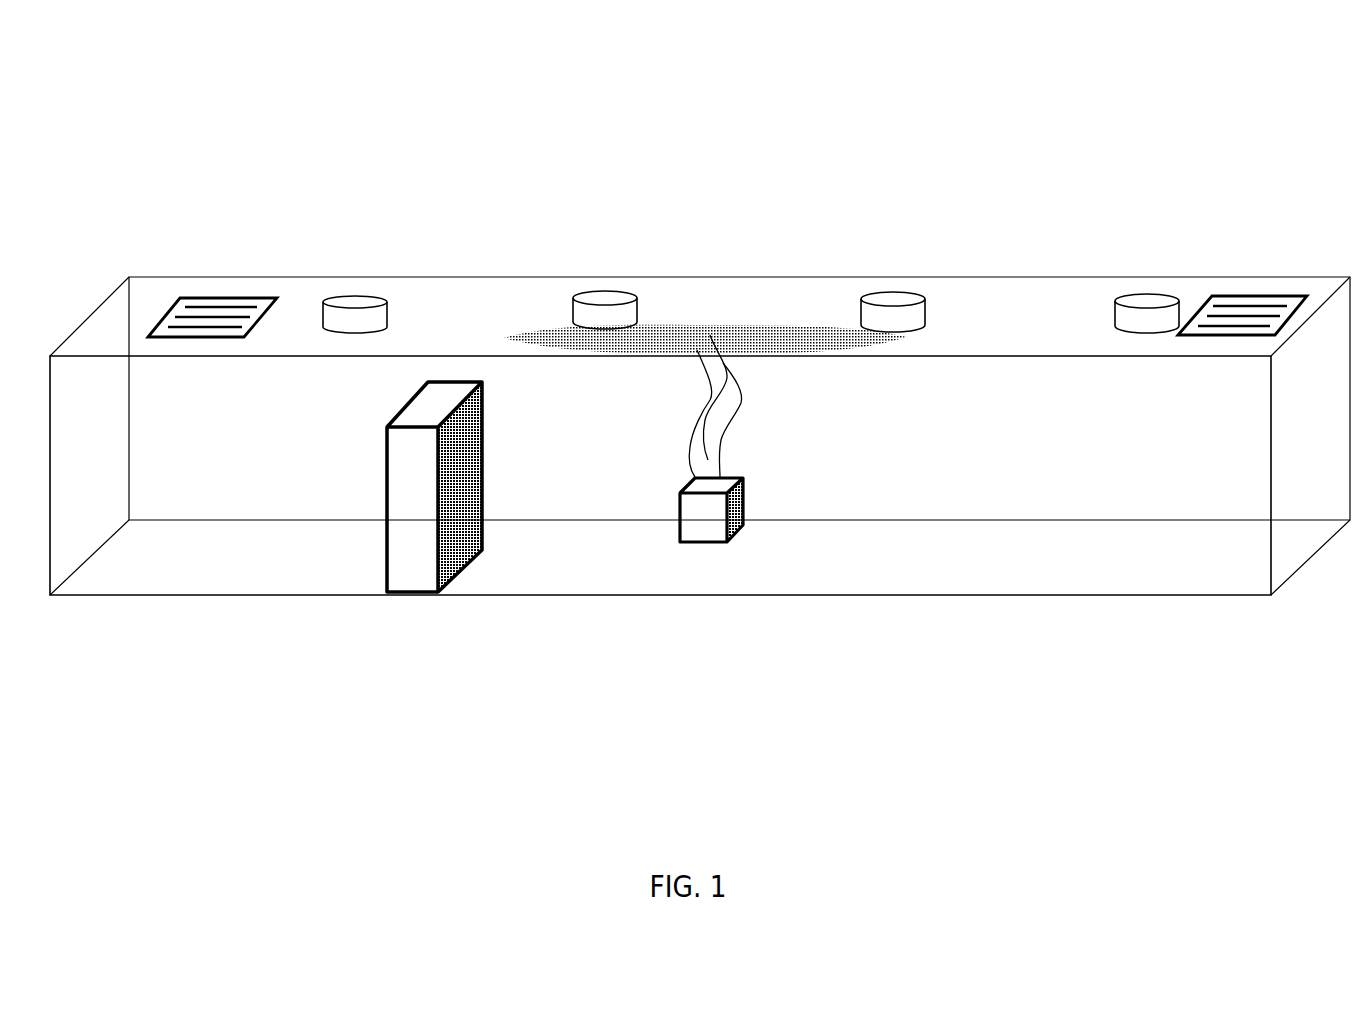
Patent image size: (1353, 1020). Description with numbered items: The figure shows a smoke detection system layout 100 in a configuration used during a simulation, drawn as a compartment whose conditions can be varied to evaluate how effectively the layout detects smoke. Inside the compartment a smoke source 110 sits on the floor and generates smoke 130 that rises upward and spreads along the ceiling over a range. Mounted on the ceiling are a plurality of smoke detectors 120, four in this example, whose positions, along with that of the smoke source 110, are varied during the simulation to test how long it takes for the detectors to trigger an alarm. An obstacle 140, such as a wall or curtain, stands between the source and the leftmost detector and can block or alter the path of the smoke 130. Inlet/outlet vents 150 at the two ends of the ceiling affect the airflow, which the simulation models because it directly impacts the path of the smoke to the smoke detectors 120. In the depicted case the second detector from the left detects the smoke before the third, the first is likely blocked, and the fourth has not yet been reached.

The smoke detection system layout 100 is at (672, 69).
The smoke source 110 is at (700, 508).
The smoke detectors 120 is at (365, 300).
The smoke 130 is at (537, 335).
The obstacles 140 is at (407, 438).
The inlet/outlet vents 150 is at (227, 303).